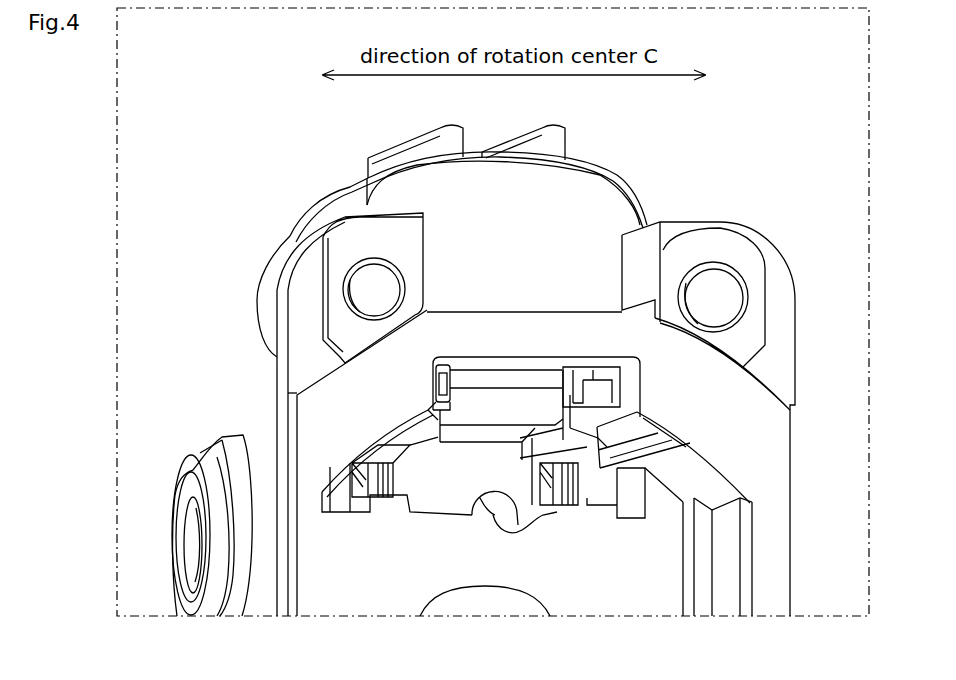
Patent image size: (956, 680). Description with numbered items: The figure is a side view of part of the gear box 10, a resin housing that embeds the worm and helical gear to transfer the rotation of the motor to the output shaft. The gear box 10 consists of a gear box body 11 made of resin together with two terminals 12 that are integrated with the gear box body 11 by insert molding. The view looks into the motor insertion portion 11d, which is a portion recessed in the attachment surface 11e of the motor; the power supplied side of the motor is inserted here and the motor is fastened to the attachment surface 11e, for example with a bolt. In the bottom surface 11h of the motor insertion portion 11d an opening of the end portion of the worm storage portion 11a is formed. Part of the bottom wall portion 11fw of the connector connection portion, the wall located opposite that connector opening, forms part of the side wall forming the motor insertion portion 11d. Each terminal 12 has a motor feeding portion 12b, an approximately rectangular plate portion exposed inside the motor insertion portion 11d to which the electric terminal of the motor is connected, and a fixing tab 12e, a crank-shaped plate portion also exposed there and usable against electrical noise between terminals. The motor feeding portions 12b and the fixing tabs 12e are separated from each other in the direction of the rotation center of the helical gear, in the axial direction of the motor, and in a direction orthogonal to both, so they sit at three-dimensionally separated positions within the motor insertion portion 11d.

The gear box 10 is at (258, 210).
The gear box body 11 is at (680, 218).
The bottom wall portion 11fw is at (580, 208).
The attachment surface 11e is at (726, 399).
The bottom surface 11h is at (471, 578).
The worm storage portion 11a is at (443, 603).
The motor insertion portion 11d is at (663, 603).
The terminal 12 is at (360, 470).
The fixing tab 12e is at (447, 366).
The motor feeding portion 12b is at (372, 497).